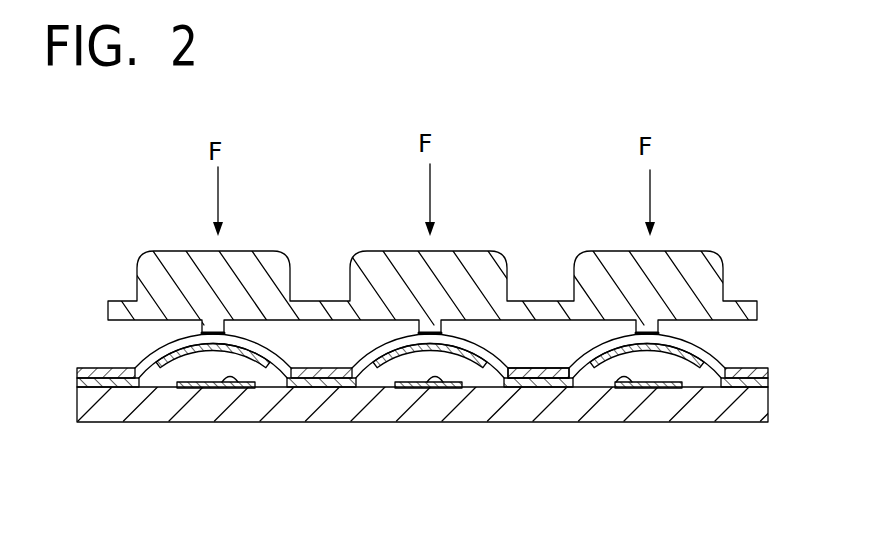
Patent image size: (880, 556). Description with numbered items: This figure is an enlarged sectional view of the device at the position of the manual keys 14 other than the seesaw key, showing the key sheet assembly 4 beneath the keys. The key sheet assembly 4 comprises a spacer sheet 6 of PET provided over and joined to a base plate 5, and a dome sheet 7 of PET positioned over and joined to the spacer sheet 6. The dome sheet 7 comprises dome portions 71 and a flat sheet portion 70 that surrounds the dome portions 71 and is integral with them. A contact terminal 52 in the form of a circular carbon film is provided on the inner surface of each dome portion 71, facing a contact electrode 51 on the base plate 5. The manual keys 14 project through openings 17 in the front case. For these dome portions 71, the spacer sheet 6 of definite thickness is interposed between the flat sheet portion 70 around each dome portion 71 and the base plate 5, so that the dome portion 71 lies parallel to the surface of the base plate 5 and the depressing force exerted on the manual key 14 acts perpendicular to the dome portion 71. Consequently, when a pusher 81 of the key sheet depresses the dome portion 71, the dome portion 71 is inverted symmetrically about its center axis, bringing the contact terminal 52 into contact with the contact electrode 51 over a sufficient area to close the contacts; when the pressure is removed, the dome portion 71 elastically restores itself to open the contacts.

The key sheet assembly 4 is at (721, 158).
The base plate 5 is at (664, 412).
The spacer sheet 6 is at (769, 384).
The dome sheet 7 is at (441, 309).
The manual key 14 is at (254, 252).
The opening 17 is at (151, 357).
The contact electrode 51 is at (221, 387).
The contact terminal 52 is at (185, 388).
The flat sheet portion 70 is at (540, 367).
The dome portion 71 is at (363, 358).
The pusher 81 is at (227, 330).